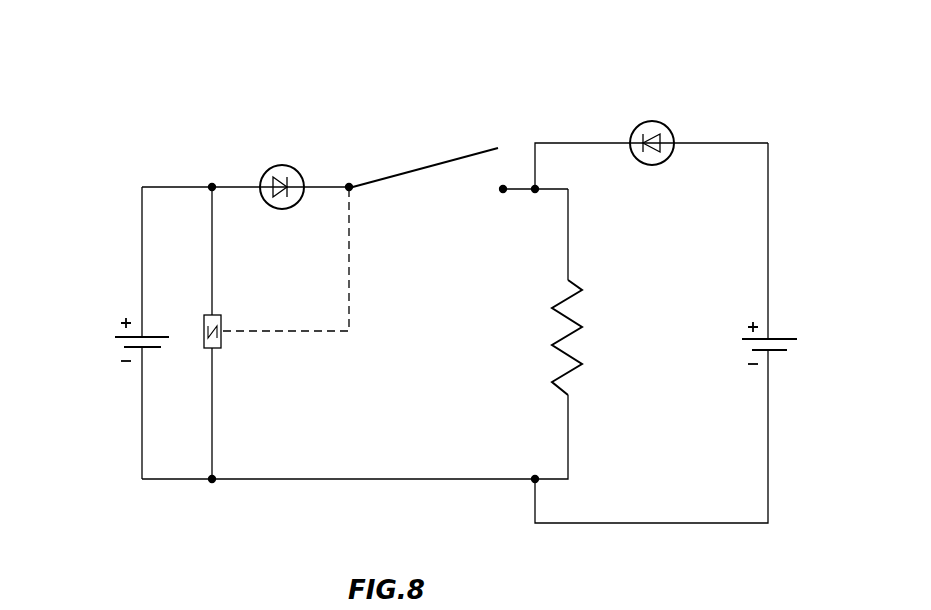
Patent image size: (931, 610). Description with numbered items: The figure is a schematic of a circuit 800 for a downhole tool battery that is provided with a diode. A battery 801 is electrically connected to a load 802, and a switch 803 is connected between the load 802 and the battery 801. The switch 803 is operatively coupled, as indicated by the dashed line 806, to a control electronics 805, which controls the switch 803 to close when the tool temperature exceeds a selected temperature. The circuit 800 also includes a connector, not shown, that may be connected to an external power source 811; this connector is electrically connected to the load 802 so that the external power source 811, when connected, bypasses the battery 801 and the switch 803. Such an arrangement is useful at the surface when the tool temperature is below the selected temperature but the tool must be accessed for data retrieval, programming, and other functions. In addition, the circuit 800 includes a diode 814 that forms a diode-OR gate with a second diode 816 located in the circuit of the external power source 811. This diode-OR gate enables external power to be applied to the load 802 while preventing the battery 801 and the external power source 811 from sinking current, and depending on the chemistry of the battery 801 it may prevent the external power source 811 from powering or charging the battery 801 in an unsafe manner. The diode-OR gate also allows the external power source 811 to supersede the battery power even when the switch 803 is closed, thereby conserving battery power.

The circuit 800 is at (132, 92).
The battery 801 is at (117, 338).
The load 802 is at (573, 315).
The switch 803 is at (473, 152).
The control electronics 805 is at (221, 343).
The dashed line 806 is at (349, 252).
The external power source 811 is at (786, 339).
The diode 814 is at (270, 165).
The second diode 816 is at (667, 122).